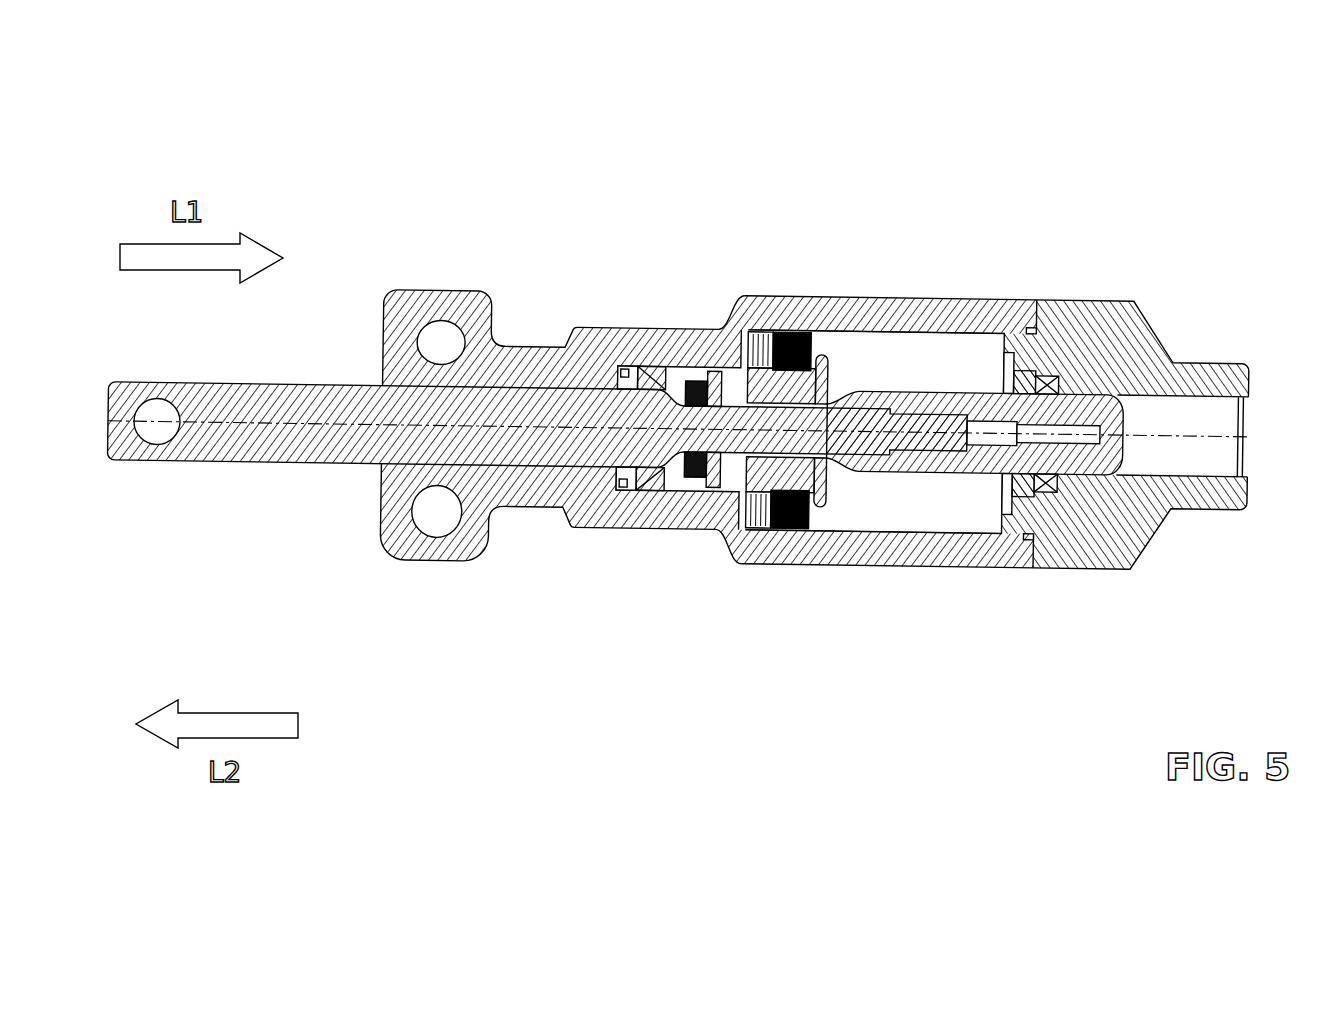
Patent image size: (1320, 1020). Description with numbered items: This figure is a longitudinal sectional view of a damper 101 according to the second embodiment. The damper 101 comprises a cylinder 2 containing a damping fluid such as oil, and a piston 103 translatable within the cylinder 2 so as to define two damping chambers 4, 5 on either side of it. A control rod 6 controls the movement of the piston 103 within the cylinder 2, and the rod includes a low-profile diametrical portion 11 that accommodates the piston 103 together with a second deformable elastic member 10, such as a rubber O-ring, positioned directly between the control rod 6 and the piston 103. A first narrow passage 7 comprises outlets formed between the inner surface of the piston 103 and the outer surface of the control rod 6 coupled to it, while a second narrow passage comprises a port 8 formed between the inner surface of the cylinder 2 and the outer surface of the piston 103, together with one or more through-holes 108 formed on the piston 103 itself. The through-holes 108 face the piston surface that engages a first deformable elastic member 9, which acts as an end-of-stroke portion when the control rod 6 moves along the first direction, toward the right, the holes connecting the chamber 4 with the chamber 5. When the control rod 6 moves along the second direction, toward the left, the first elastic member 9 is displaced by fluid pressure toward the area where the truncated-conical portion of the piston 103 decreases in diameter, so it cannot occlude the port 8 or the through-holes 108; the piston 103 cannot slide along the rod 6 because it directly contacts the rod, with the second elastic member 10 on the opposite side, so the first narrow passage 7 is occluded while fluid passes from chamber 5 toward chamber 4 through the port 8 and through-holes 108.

The damper 101 is at (678, 409).
The cylinder 2 is at (999, 311).
The damping chamber 4 is at (932, 374).
The damping chamber 5 is at (603, 506).
The control rod 6 is at (275, 450).
The first narrow passage 7 is at (839, 443).
The port 8 is at (762, 332).
The first deformable elastic member 9 is at (784, 525).
The second deformable elastic member 10 is at (688, 382).
The low-profile diametrical portion 11 is at (913, 567).
The piston 103 is at (790, 375).
The through-hole 108 is at (742, 512).